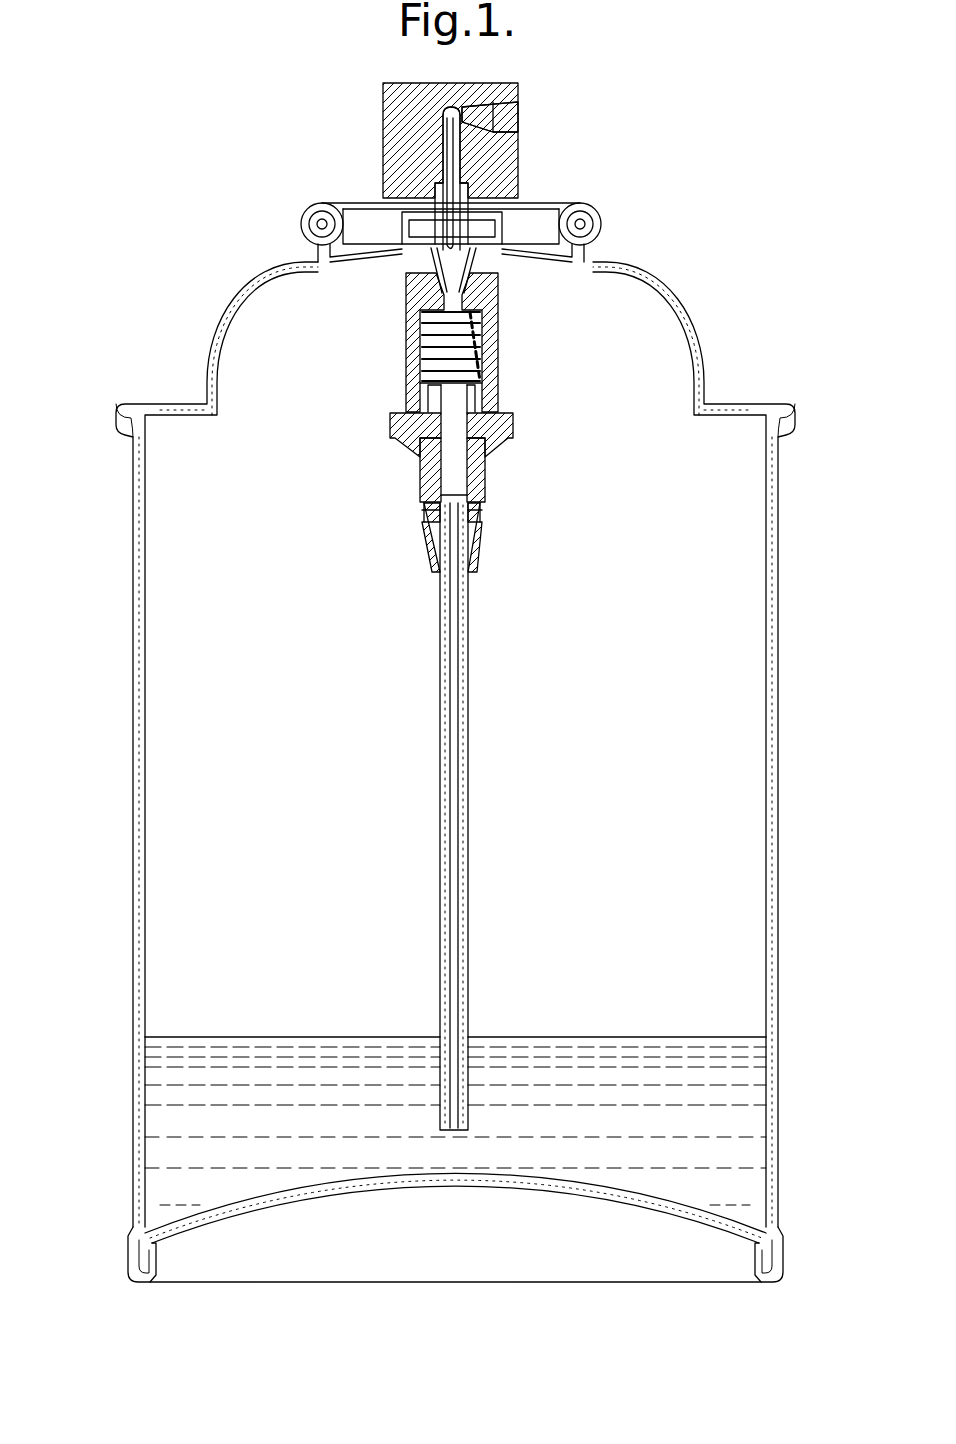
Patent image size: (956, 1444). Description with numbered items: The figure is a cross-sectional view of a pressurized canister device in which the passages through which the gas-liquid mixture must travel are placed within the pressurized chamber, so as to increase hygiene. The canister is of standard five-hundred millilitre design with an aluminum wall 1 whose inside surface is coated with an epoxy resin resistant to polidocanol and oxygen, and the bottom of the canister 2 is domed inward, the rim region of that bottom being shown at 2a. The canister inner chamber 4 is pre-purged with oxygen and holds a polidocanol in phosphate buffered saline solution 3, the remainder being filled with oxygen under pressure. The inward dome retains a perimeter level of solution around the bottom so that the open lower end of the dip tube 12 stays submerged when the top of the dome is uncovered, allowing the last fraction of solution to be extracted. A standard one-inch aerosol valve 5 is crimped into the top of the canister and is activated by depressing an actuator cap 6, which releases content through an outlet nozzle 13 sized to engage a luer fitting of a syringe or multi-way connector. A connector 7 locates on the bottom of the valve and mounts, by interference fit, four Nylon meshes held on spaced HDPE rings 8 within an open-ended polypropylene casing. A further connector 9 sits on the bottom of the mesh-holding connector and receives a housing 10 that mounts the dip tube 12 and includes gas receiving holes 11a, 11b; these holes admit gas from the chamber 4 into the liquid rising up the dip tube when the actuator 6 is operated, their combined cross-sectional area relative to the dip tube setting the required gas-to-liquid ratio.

The aluminum wall 1 is at (133, 848).
The bottom of the canister 2 is at (437, 1185).
The bottom rim seam 2a is at (757, 1218).
The polidocanol solution 3 is at (527, 1077).
The canister inner chamber 4 is at (519, 731).
The aerosol valve 5 is at (403, 227).
The actuator cap 6 is at (383, 104).
The connector 7 is at (497, 295).
The HDPE rings 8 is at (432, 353).
The connector 9 is at (500, 425).
The housing 10 is at (420, 470).
The gas receiving hole 11a is at (422, 515).
The gas receiving hole 11b is at (483, 538).
The dip tube 12 is at (441, 853).
The outlet nozzle 13 is at (508, 113).